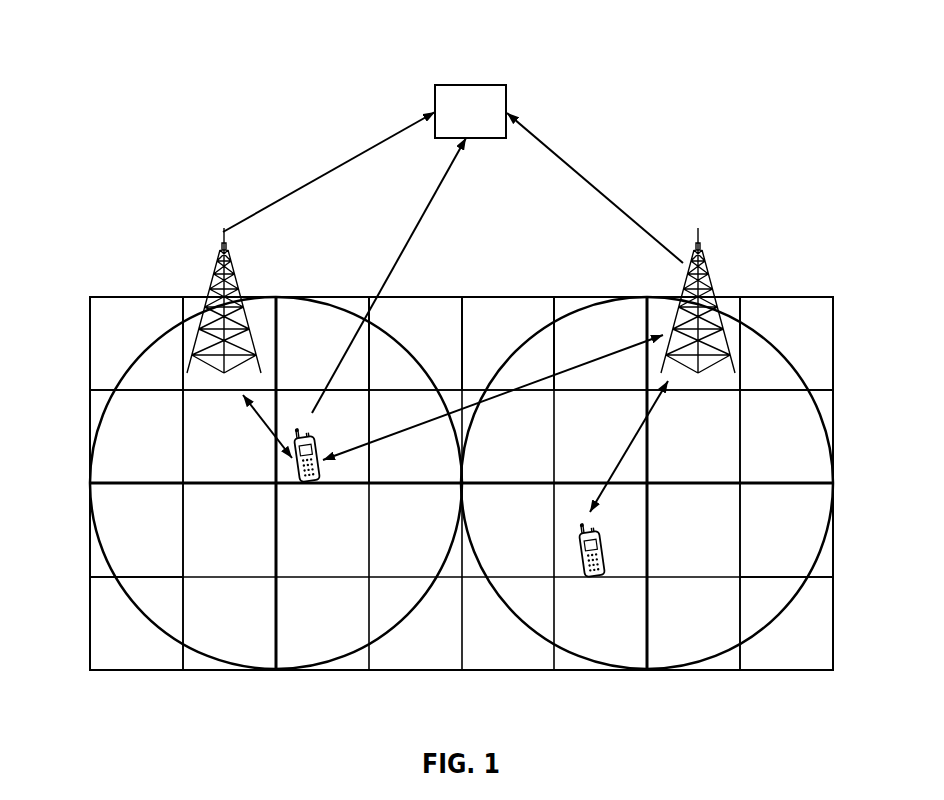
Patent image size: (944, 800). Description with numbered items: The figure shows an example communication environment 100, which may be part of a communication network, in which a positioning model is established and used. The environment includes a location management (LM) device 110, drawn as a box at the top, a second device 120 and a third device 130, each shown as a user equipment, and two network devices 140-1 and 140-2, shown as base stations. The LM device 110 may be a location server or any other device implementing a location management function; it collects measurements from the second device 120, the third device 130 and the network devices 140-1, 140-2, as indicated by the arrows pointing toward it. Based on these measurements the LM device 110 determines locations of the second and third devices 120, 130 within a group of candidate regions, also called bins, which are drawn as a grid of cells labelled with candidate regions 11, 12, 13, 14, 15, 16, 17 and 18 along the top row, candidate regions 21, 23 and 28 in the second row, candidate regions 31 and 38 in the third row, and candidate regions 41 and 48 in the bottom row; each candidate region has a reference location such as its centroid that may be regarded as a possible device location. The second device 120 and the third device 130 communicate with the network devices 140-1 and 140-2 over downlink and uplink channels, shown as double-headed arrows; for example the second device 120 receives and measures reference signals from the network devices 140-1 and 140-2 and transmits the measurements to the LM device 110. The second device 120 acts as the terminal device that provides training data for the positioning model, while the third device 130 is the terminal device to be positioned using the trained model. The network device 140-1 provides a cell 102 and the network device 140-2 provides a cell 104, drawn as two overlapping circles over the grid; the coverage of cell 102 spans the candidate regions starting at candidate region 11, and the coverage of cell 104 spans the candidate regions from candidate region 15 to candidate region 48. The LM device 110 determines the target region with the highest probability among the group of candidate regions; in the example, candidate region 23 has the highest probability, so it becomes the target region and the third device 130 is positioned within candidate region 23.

The communication environment 100 is at (175, 52).
The location management (LM) device 110 is at (478, 85).
The cell 102 is at (150, 343).
The cell 104 is at (763, 332).
The network device 140-1 is at (224, 240).
The network device 140-2 is at (698, 243).
The third device 130 is at (314, 432).
The second device 120 is at (598, 530).
The candidate region 11 is at (110, 297).
The candidate region 12 is at (240, 297).
The candidate region 13 is at (313, 297).
The candidate region 14 is at (410, 297).
The candidate region 15 is at (510, 297).
The candidate region 16 is at (594, 297).
The candidate region 17 is at (718, 297).
The candidate region 18 is at (835, 350).
The candidate region 21 is at (88, 443).
The candidate region 23 is at (372, 422).
The candidate region 28 is at (835, 443).
The candidate region 31 is at (88, 545).
The candidate region 38 is at (835, 535).
The candidate region 41 is at (88, 637).
The candidate region 48 is at (835, 622).